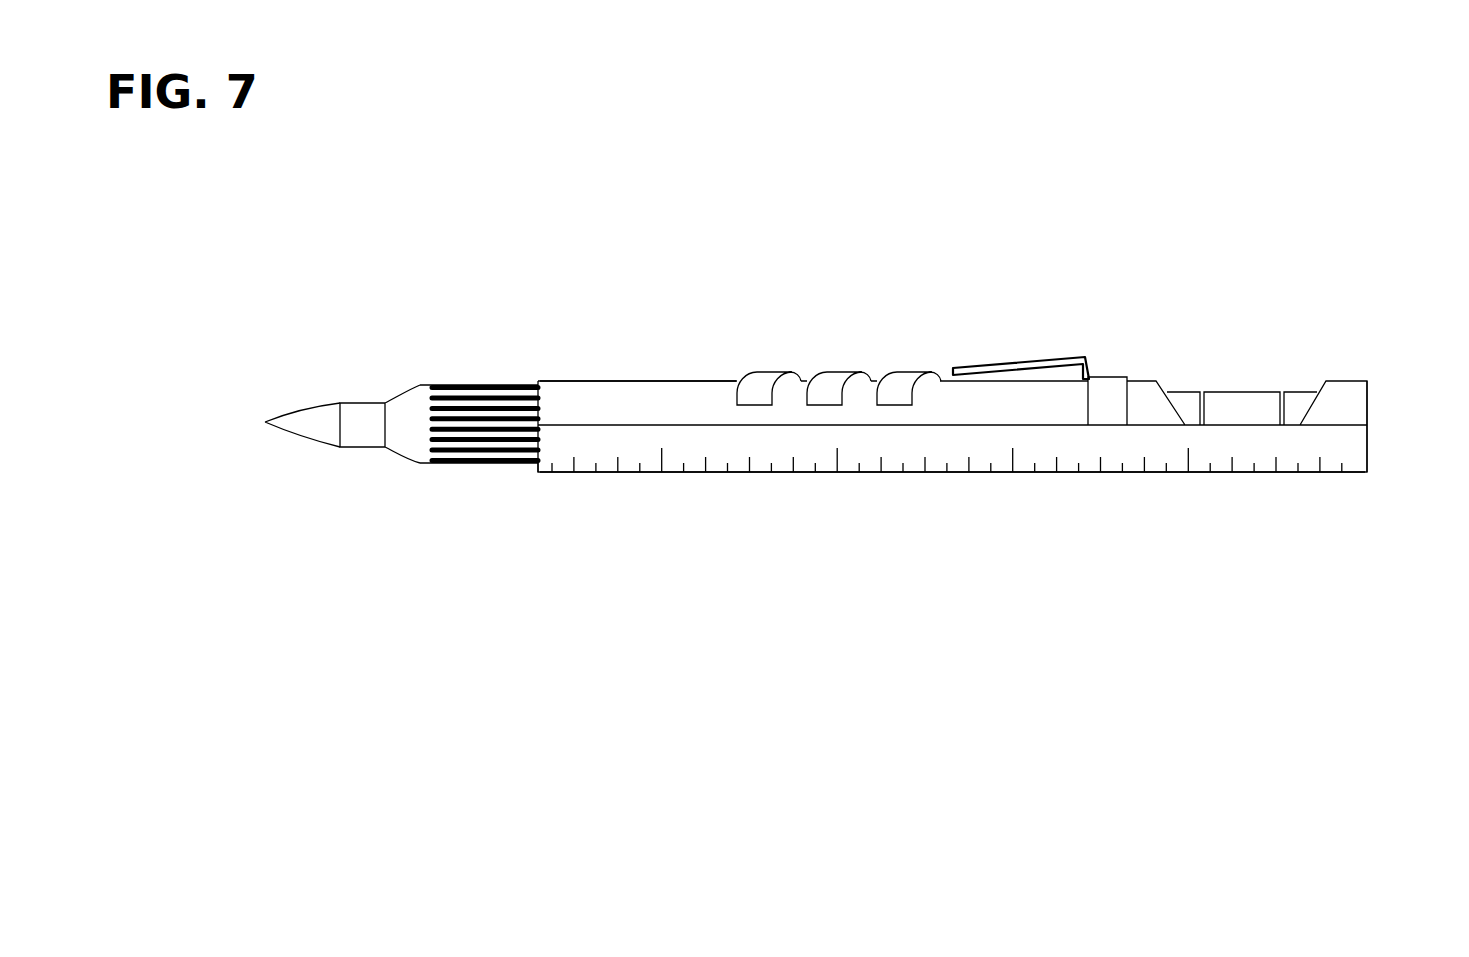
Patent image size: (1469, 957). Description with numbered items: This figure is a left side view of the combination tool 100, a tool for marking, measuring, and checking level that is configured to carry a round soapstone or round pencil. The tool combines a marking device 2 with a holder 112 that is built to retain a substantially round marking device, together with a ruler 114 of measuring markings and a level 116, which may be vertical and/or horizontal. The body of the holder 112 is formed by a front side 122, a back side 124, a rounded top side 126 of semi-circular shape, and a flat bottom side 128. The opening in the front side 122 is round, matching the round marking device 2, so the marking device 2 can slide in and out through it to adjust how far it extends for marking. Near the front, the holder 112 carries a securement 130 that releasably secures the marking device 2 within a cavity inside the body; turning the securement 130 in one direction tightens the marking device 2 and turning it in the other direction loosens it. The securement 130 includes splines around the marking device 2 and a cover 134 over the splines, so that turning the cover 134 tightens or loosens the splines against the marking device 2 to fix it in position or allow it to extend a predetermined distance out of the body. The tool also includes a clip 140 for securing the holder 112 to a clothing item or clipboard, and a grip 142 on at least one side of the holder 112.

The marking device 2 is at (285, 413).
The combination tool 100 is at (550, 292).
The holder 112 is at (566, 380).
The ruler 114 is at (838, 456).
The level 116 is at (1215, 392).
The front side 122 is at (536, 474).
The back side 124 is at (1367, 437).
The top side 126 is at (668, 380).
The bottom side 128 is at (580, 473).
The securement 130 is at (395, 392).
The cover 134 is at (452, 385).
The clip 140 is at (1008, 363).
The grip 142 is at (837, 372).